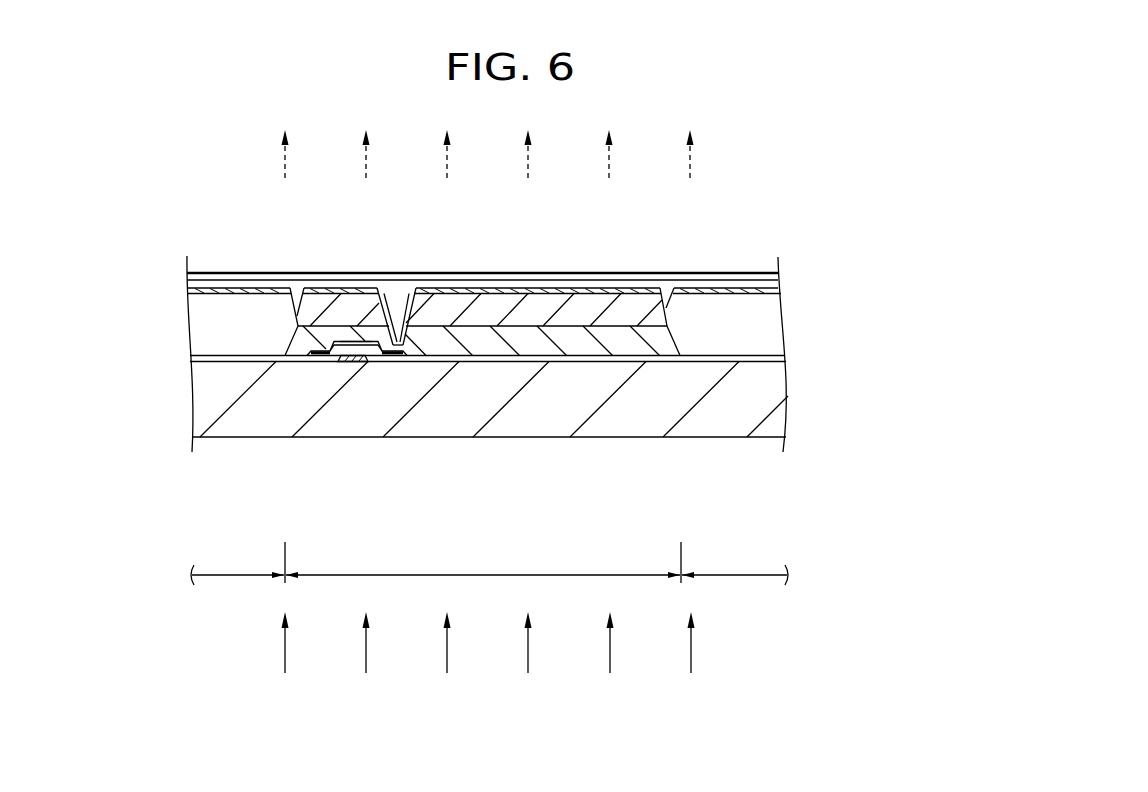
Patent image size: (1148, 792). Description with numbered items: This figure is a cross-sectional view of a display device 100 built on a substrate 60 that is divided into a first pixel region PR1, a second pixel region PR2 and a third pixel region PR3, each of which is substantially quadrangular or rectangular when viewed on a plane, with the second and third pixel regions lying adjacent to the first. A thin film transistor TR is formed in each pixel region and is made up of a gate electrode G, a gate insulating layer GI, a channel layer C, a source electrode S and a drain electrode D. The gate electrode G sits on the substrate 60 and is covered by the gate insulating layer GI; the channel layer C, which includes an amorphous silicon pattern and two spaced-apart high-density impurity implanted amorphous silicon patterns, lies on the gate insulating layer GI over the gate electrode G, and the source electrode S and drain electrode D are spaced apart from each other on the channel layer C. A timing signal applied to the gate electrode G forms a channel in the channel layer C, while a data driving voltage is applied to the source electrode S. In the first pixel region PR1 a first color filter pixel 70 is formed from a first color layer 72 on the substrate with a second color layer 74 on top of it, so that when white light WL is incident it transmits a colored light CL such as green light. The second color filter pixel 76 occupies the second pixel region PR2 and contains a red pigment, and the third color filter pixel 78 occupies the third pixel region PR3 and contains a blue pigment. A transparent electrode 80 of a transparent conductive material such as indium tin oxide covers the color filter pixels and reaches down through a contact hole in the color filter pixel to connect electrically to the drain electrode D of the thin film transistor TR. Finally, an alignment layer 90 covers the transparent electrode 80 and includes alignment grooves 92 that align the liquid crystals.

The display device 100 is at (763, 236).
The alignment layer 90 is at (793, 280).
The alignment grooves 92 is at (698, 278).
The transparent electrode 80 is at (747, 293).
The third color filter pixel 78 is at (763, 332).
The second color filter pixel 76 is at (198, 319).
The first color filter pixel 70 is at (567, 219).
The second color layer 74 is at (500, 300).
The first color layer 72 is at (551, 336).
The gate insulating layer GI is at (767, 356).
The substrate 60 is at (763, 403).
The thin film transistor TR is at (354, 376).
The gate electrode G is at (342, 357).
The source electrode S is at (317, 353).
The drain electrode D is at (398, 353).
The channel layer C is at (336, 343).
The colored light CL is at (488, 137).
The white light WL is at (488, 662).
The first pixel region PR1 is at (483, 563).
The second pixel region PR2 is at (238, 563).
The third pixel region PR3 is at (734, 563).